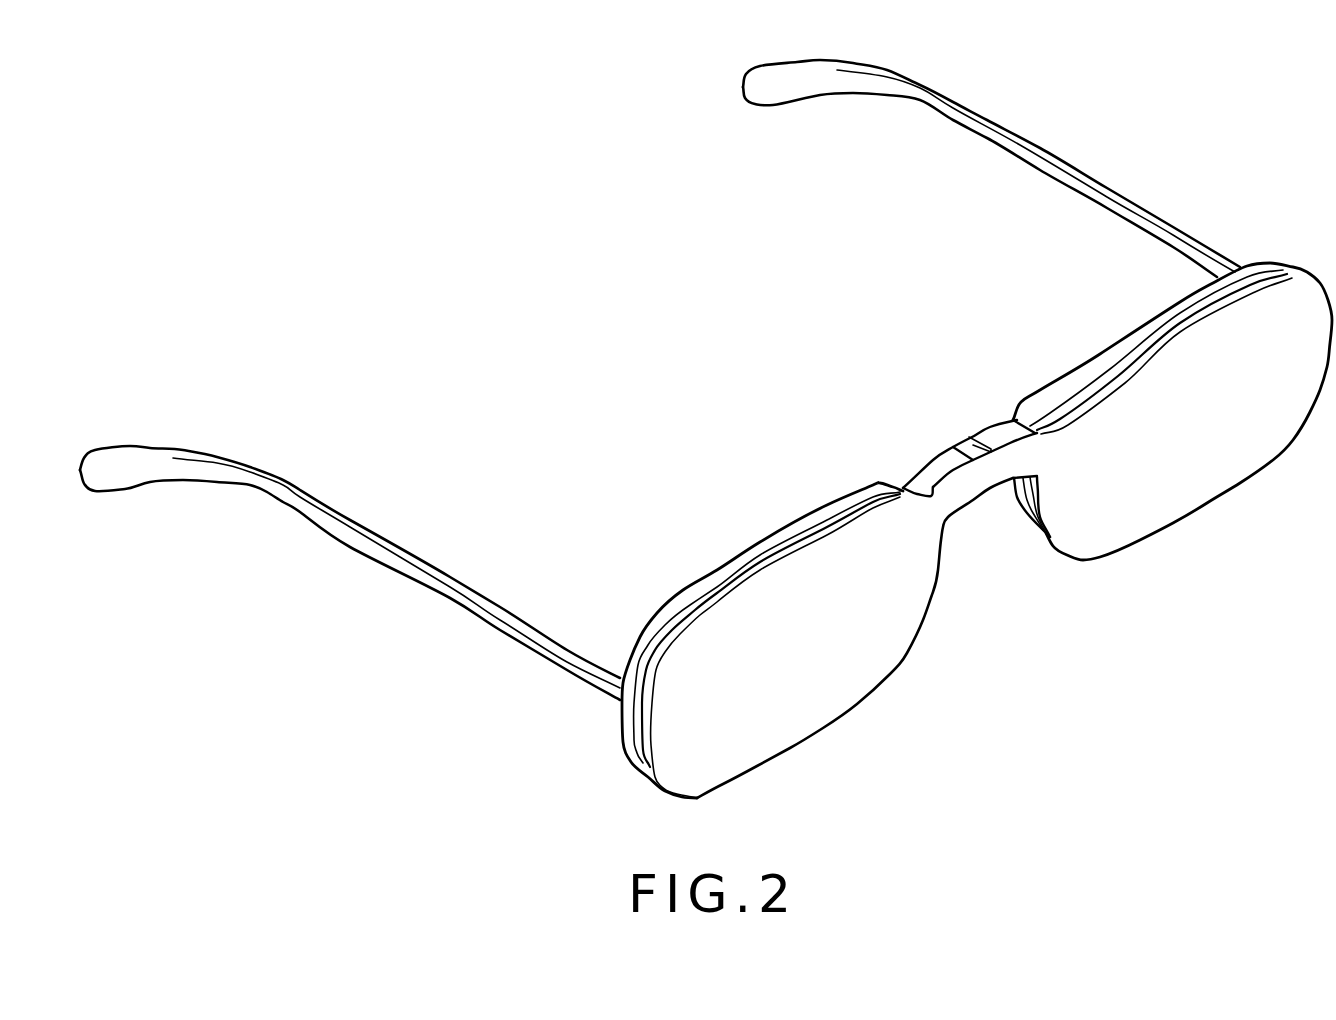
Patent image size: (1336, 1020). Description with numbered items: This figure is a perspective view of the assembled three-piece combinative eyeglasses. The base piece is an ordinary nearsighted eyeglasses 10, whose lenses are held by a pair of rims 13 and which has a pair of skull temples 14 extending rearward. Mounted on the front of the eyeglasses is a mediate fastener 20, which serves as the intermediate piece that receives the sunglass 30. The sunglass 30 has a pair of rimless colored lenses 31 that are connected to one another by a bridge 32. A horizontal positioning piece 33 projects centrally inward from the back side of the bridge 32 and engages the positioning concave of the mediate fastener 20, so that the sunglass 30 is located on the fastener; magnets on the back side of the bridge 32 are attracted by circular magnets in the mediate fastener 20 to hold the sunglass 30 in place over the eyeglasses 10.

The ordinary nearsighted eyeglasses 10 is at (660, 429).
The rims 13 is at (713, 580).
The skull temples 14 is at (507, 627).
The mediate fastener 20 is at (903, 438).
The sunglass 30 is at (1107, 479).
The rimless colored lenses 31 is at (1183, 460).
The bridge 32 is at (972, 490).
The horizontal positioning piece 33 is at (960, 453).